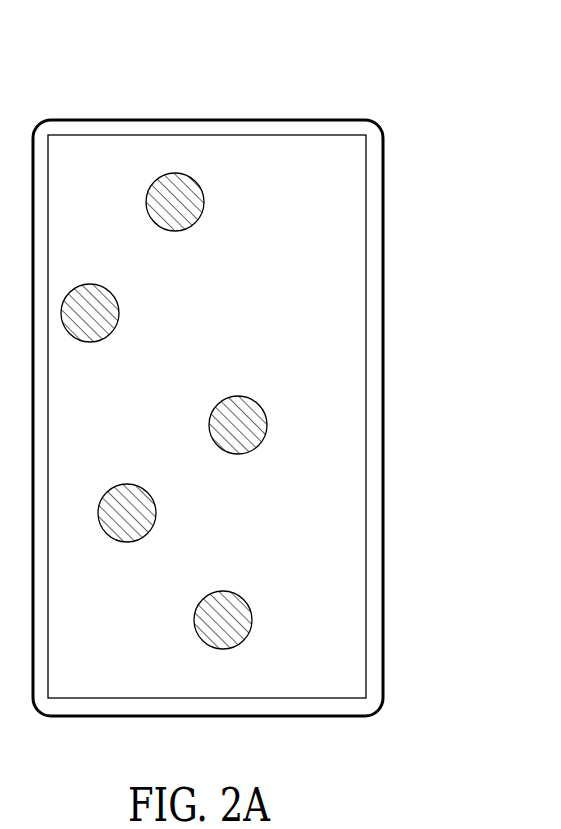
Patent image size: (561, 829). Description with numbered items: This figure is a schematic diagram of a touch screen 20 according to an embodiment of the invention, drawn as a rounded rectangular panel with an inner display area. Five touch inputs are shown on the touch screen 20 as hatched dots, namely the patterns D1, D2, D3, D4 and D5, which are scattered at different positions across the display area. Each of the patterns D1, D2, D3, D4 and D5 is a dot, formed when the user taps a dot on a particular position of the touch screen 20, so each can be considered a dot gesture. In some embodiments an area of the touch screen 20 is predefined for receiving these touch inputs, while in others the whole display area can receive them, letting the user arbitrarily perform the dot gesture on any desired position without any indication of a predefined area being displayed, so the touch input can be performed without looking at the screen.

The touch screen 20 is at (410, 110).
The pattern D1 is at (112, 313).
The pattern D2 is at (198, 202).
The pattern D3 is at (246, 620).
The pattern D4 is at (260, 425).
The pattern D5 is at (150, 513).